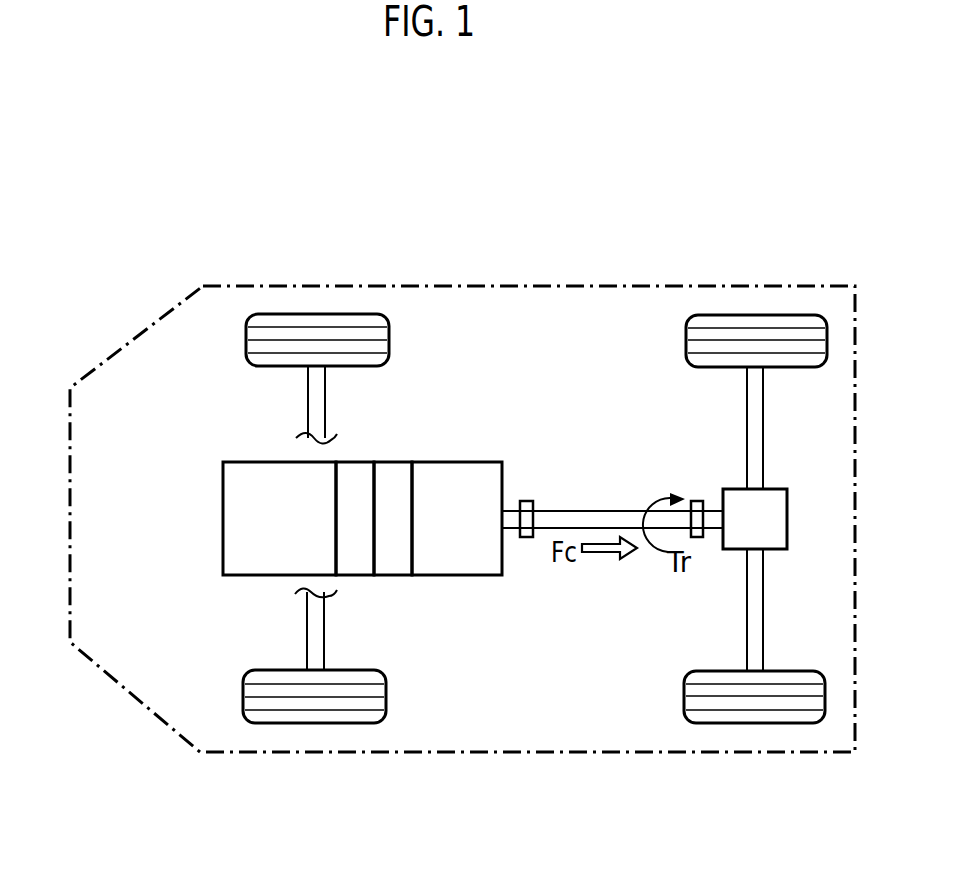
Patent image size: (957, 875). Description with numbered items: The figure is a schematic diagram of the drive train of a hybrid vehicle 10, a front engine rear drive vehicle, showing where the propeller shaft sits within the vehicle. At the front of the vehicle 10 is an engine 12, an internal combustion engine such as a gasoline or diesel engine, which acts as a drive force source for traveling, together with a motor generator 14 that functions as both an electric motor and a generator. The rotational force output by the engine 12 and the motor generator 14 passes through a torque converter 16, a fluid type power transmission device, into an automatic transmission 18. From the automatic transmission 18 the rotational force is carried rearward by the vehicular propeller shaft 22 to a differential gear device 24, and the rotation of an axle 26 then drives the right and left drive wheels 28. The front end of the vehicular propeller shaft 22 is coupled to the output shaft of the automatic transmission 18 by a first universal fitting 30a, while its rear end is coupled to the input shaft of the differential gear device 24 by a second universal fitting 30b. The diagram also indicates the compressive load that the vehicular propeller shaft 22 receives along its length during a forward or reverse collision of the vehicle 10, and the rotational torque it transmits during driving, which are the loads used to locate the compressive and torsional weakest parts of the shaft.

The hybrid vehicle 10 is at (208, 240).
The engine 12 is at (284, 461).
The motor generator 14 is at (348, 461).
The torque converter 16 is at (402, 461).
The automatic transmission 18 is at (468, 461).
The vehicular propeller shaft 22 is at (581, 511).
The differential gear device 24 is at (779, 489).
The axle 26 is at (755, 415).
The drive wheels 28 is at (692, 330).
The first universal fitting 30a is at (527, 500).
The second universal fitting 30b is at (697, 500).